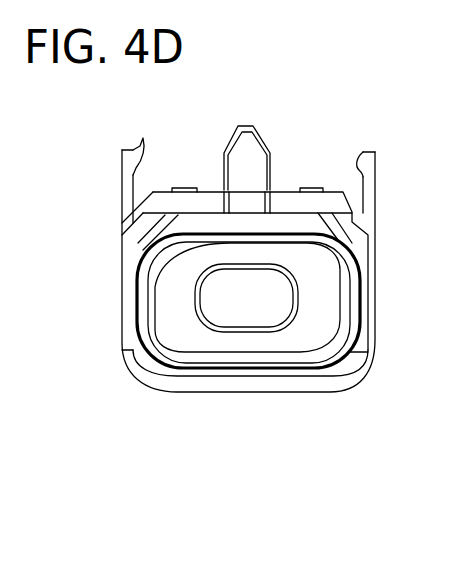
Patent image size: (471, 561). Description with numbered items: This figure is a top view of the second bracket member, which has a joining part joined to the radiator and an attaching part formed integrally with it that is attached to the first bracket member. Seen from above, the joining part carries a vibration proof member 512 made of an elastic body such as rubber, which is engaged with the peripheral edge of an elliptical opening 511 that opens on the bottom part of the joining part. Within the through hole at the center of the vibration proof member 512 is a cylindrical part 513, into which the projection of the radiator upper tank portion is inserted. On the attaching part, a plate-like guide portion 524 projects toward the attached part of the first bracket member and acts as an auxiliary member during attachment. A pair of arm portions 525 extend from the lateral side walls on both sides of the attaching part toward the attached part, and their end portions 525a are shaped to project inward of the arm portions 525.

The elliptical opening 511 is at (172, 253).
The vibration proof member 512 is at (181, 323).
The cylindrical part 513 is at (273, 333).
The guide portion 524 is at (265, 146).
The arm portions 525 is at (122, 188).
The end portions 525a is at (143, 140).